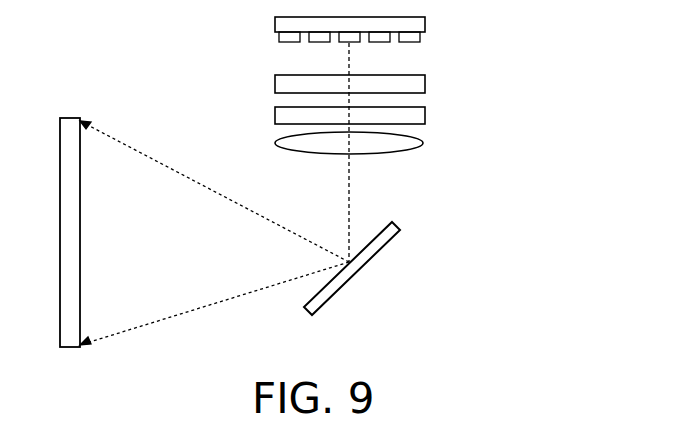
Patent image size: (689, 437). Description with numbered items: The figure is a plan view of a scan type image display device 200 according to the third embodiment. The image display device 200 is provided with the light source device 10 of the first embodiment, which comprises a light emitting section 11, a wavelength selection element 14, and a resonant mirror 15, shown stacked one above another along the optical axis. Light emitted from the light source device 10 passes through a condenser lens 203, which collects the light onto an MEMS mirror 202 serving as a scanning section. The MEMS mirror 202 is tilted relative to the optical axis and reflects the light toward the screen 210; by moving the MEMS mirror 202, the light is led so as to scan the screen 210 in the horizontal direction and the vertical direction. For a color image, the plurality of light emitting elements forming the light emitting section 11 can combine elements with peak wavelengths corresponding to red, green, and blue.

The light source device 10 is at (340, 50).
The light emitting section 11 is at (272, 27).
The wavelength selection element 14 is at (275, 84).
The resonant mirror 15 is at (275, 116).
The image display device 200 is at (537, 63).
The MEMS mirror 202 is at (398, 224).
The condenser lens 203 is at (423, 140).
The screen 210 is at (71, 118).